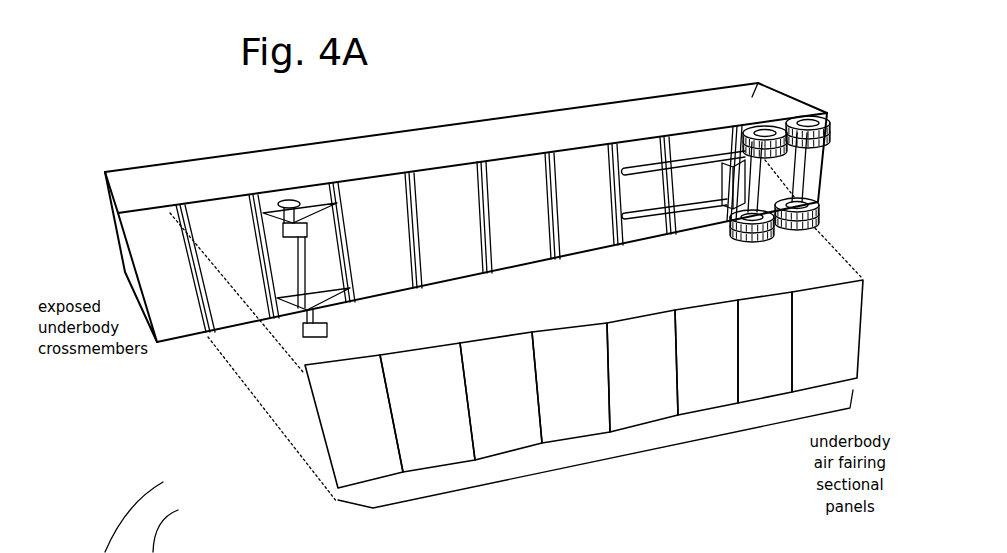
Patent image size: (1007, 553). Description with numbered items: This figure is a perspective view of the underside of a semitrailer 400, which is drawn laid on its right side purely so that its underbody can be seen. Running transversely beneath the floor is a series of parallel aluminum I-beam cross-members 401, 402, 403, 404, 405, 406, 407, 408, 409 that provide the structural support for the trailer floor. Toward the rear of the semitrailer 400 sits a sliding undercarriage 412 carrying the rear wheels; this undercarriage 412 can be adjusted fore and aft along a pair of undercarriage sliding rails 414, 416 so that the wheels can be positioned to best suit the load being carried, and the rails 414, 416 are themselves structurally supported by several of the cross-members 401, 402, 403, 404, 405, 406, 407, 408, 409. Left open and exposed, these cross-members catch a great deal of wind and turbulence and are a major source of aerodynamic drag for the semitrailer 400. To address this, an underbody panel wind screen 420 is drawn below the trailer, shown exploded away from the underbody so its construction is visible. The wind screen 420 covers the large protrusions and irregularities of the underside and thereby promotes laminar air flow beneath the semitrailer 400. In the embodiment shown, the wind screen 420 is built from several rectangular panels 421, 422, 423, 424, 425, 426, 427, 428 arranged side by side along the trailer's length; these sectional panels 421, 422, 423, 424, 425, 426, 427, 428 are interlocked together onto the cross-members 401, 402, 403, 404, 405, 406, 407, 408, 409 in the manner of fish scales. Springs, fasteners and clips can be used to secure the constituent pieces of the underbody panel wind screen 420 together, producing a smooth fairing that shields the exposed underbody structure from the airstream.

The semitrailer 400 is at (116, 214).
The I-beam cross-member 401 is at (178, 203).
The I-beam cross-member 402 is at (252, 192).
The I-beam cross-member 403 is at (332, 181).
The I-beam cross-member 404 is at (410, 171).
The I-beam cross-member 405 is at (479, 165).
The I-beam cross-member 406 is at (545, 150).
The I-beam cross-member 407 is at (610, 145).
The I-beam cross-member 408 is at (663, 137).
The I-beam cross-member 409 is at (730, 125).
The sliding undercarriage 412 is at (820, 170).
The undercarriage sliding rail 414 is at (641, 171).
The undercarriage sliding rail 416 is at (682, 208).
The underbody panel wind screen 420 is at (625, 458).
The rectangular panel 421 is at (370, 416).
The rectangular panel 422 is at (443, 404).
The rectangular panel 423 is at (510, 391).
The rectangular panel 424 is at (588, 386).
The rectangular panel 425 is at (655, 381).
The rectangular panel 426 is at (717, 368).
The rectangular panel 427 is at (782, 363).
The rectangular panel 428 is at (840, 351).